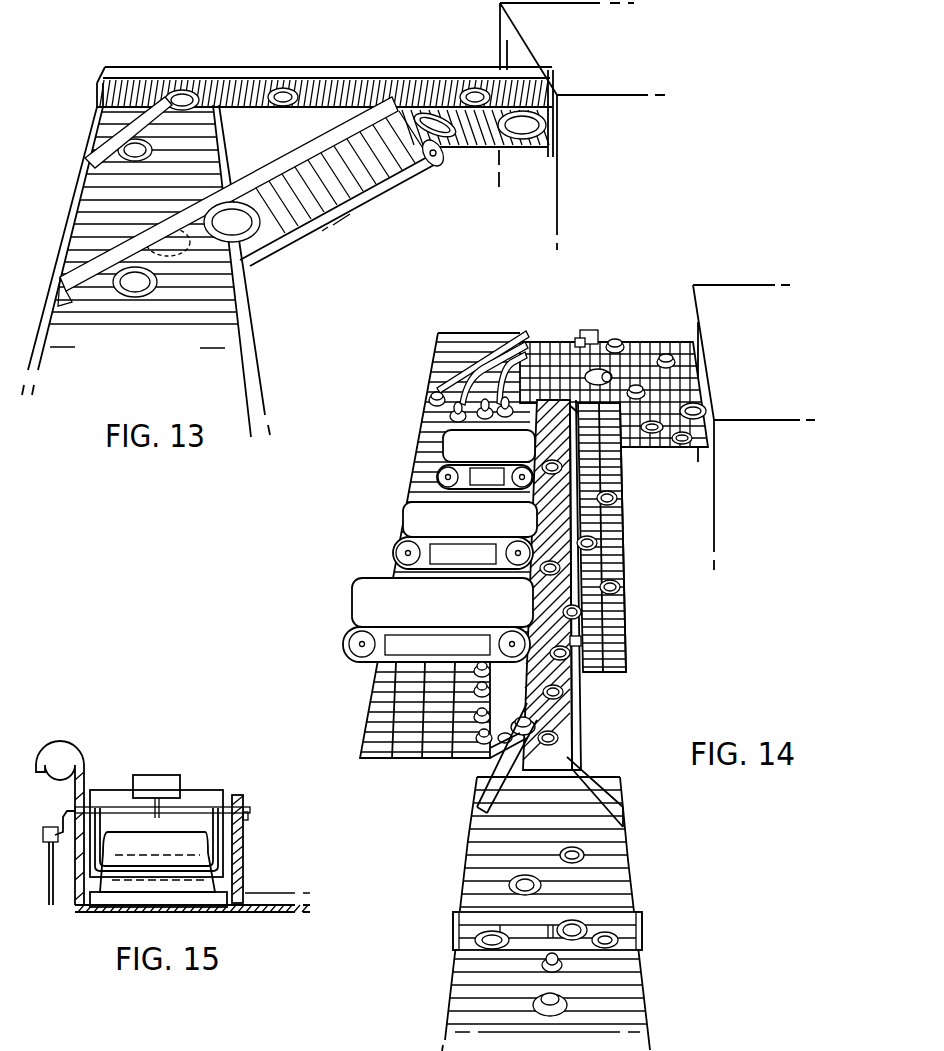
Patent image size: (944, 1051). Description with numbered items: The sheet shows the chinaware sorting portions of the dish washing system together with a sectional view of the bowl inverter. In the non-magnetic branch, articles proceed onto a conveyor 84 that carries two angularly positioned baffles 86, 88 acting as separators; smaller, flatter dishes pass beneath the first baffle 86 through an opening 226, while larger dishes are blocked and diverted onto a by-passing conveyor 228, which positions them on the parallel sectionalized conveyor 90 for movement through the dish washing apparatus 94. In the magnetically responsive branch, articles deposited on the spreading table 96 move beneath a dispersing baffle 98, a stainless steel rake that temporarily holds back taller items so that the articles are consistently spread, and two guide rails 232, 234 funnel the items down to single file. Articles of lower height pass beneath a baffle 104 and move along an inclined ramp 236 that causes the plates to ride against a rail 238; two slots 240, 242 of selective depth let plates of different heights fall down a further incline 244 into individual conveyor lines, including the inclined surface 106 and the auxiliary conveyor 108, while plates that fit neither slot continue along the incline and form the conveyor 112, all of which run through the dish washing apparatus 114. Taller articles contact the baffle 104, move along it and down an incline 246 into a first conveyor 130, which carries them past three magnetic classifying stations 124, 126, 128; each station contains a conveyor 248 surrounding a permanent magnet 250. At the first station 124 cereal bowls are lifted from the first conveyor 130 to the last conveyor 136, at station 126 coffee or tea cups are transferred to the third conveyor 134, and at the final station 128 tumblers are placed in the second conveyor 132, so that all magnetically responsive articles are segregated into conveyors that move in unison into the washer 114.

In FIG. 13, the conveyor 84 is at (230, 342).
In FIG. 13, the baffle 86 is at (75, 277).
In FIG. 13, the baffle 88 is at (103, 143).
In FIG. 13, the sectionalized conveyor 90 is at (476, 132).
In FIG. 13, the dish washing apparatus 94 is at (618, 56).
In FIG. 13, the opening 226 is at (75, 295).
In FIG. 13, the by-passing conveyor 228 is at (297, 212).
In FIG. 14, the spreading table 96 is at (636, 983).
In FIG. 14, the dispersing baffle 98 is at (630, 915).
In FIG. 14, the baffle 104 is at (563, 733).
In FIG. 14, the inclined surface 106 is at (590, 523).
In FIG. 14, the auxiliary conveyor 108 is at (612, 540).
In FIG. 14, the auxiliary conveyor 112 is at (670, 440).
In FIG. 14, the dish washing apparatus 114 is at (785, 364).
In FIG. 14, the magnetic classifying station 124 is at (345, 623).
In FIG. 14, the magnetic classifying station 126 is at (394, 536).
In FIG. 14, the magnetic classifying station 128 is at (440, 453).
In FIG. 14, the first conveyor 130 is at (460, 754).
In FIG. 14, the second conveyor 132 is at (430, 756).
In FIG. 14, the third conveyor 134 is at (402, 757).
In FIG. 14, the last conveyor 136 is at (378, 716).
In FIG. 14, the guide rail 232 is at (490, 790).
In FIG. 14, the guide rail 234 is at (633, 819).
In FIG. 14, the inclined ramp 236 is at (573, 678).
In FIG. 14, the rail 238 is at (560, 678).
In FIG. 14, the slot 240 is at (582, 641).
In FIG. 14, the slot 242 is at (579, 610).
In FIG. 14, the further incline 244 is at (592, 658).
In FIG. 14, the incline 246 is at (492, 752).
In FIG. 14, the conveyor 248 is at (452, 618).
In FIG. 14, the permanent magnet 250 is at (395, 648).